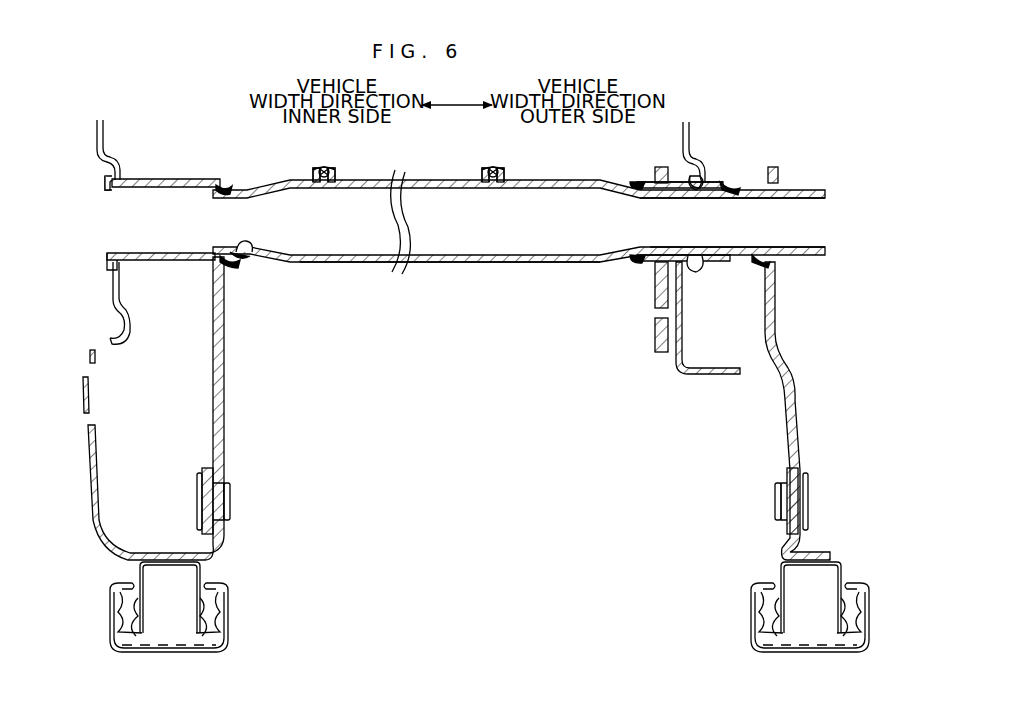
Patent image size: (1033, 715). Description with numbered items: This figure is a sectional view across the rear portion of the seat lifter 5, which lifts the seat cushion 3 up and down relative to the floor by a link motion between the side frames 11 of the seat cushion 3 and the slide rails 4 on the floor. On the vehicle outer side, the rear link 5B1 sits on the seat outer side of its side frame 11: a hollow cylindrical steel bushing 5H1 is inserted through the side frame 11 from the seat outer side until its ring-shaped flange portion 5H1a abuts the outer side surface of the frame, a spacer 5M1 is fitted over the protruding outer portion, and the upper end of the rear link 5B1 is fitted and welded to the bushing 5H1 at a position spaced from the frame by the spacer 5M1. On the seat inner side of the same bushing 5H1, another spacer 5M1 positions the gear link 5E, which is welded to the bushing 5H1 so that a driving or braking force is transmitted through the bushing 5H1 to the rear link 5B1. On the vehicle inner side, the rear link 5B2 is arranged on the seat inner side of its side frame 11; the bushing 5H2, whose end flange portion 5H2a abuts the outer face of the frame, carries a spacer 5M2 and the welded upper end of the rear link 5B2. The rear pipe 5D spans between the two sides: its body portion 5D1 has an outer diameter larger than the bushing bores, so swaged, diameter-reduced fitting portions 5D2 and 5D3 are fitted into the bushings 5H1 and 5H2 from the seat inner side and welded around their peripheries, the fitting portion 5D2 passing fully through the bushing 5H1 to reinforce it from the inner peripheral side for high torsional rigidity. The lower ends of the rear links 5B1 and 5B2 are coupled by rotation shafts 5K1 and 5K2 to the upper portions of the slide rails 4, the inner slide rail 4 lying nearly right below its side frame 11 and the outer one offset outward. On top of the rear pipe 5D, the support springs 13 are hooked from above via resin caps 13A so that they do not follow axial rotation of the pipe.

The seat cushion 3 is at (780, 146).
The slide rail 4 is at (204, 578).
The seat lifter 5 is at (828, 170).
The rear link 5B1 is at (778, 326).
The rear link 5B2 is at (226, 330).
The rear pipe 5D is at (515, 266).
The body portion 5D1 is at (435, 264).
The fitting portion 5D2 is at (812, 250).
The fitting portion 5D3 is at (243, 257).
The gear link 5E is at (656, 282).
The bushing 5H1 is at (650, 250).
The flange portion 5H1a is at (700, 178).
The bushing 5H2 is at (121, 192).
The flange portion 5H2a is at (104, 184).
The rotation shaft 5K1 is at (797, 500).
The rotation shaft 5K2 is at (207, 500).
The spacer 5M1 is at (674, 180).
The spacer 5M2 is at (166, 262).
The side frame 11 is at (104, 132).
The support spring 13 is at (326, 167).
The resin cap 13A is at (336, 172).